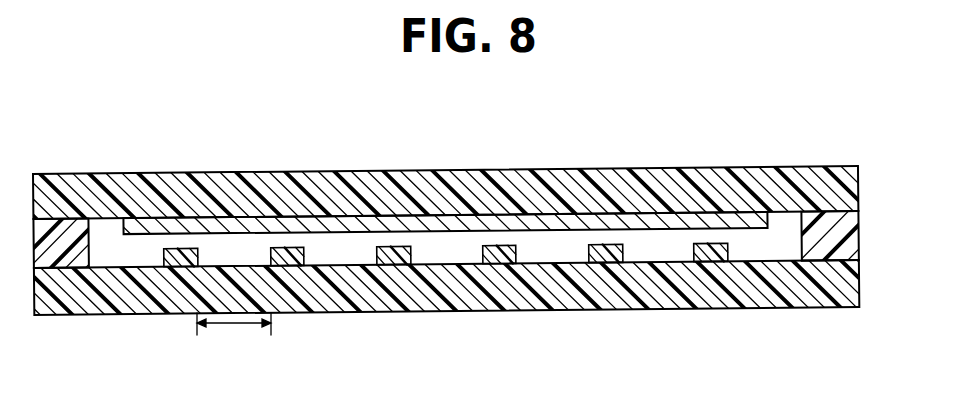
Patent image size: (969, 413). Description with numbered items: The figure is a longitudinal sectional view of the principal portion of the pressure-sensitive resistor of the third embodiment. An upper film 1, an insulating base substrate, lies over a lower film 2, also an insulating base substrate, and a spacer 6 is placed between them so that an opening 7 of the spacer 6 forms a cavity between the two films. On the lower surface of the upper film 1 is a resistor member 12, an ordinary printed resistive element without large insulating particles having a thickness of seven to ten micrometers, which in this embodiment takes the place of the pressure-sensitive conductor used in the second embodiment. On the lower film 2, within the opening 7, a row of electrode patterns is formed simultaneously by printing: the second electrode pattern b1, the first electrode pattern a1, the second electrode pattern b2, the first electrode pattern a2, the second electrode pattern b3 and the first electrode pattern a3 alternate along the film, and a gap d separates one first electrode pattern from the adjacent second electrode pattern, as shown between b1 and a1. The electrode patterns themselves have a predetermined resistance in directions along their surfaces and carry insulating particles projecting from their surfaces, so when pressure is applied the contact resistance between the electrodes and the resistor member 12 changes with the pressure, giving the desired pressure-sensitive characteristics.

The upper film 1 is at (848, 188).
The lower film 2 is at (848, 283).
The spacer 6 is at (848, 238).
The opening 7 is at (107, 230).
The resistor member 12 is at (722, 222).
The second electrode pattern b1 is at (180, 258).
The first electrode pattern a1 is at (287, 258).
The second electrode pattern b2 is at (392, 256).
The first electrode pattern a2 is at (498, 255).
The second electrode pattern b3 is at (604, 254).
The first electrode pattern a3 is at (711, 253).
The gap d is at (232, 326).